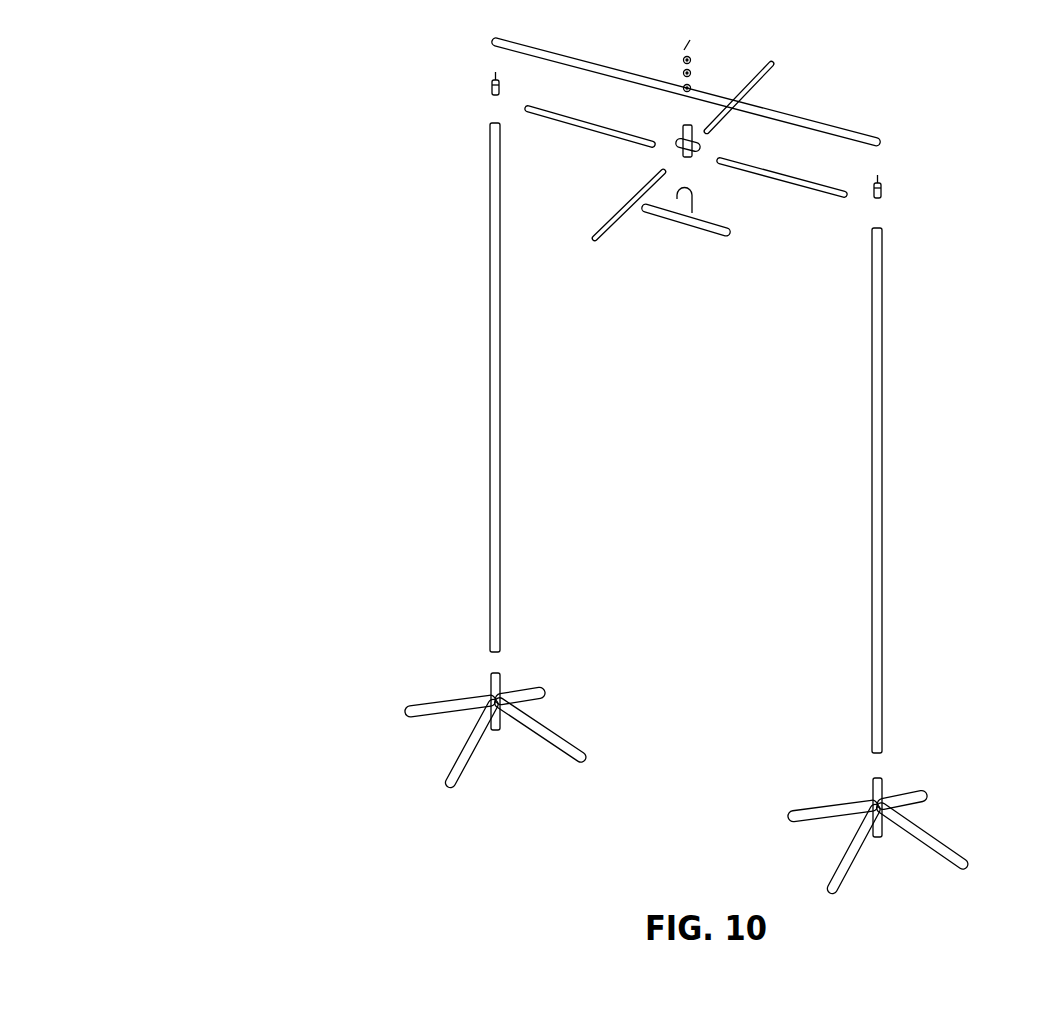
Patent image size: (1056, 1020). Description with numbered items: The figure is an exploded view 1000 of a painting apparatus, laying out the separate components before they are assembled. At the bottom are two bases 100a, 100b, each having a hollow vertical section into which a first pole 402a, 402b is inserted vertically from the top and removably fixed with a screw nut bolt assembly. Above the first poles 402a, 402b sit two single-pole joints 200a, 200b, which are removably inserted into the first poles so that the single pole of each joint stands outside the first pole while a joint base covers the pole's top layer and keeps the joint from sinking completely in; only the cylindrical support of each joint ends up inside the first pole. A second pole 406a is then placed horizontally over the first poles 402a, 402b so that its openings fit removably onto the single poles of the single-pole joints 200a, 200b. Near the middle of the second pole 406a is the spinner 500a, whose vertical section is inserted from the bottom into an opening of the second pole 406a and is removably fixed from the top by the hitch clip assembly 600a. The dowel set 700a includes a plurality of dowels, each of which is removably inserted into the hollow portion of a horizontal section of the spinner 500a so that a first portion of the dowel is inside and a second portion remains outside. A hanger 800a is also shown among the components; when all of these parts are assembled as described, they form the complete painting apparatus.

The exploded view 1000 is at (249, 243).
The base 100a is at (478, 698).
The base 100b is at (838, 803).
The first pole 402a is at (493, 418).
The first pole 402b is at (873, 413).
The single-pole joint 200a is at (482, 78).
The single-pole joint 200b is at (897, 182).
The second pole 406a is at (825, 123).
The spinner 500a is at (685, 130).
The hitch clip assembly 600a is at (697, 57).
The dowel set 700a is at (767, 87).
The hanger 800a is at (698, 227).